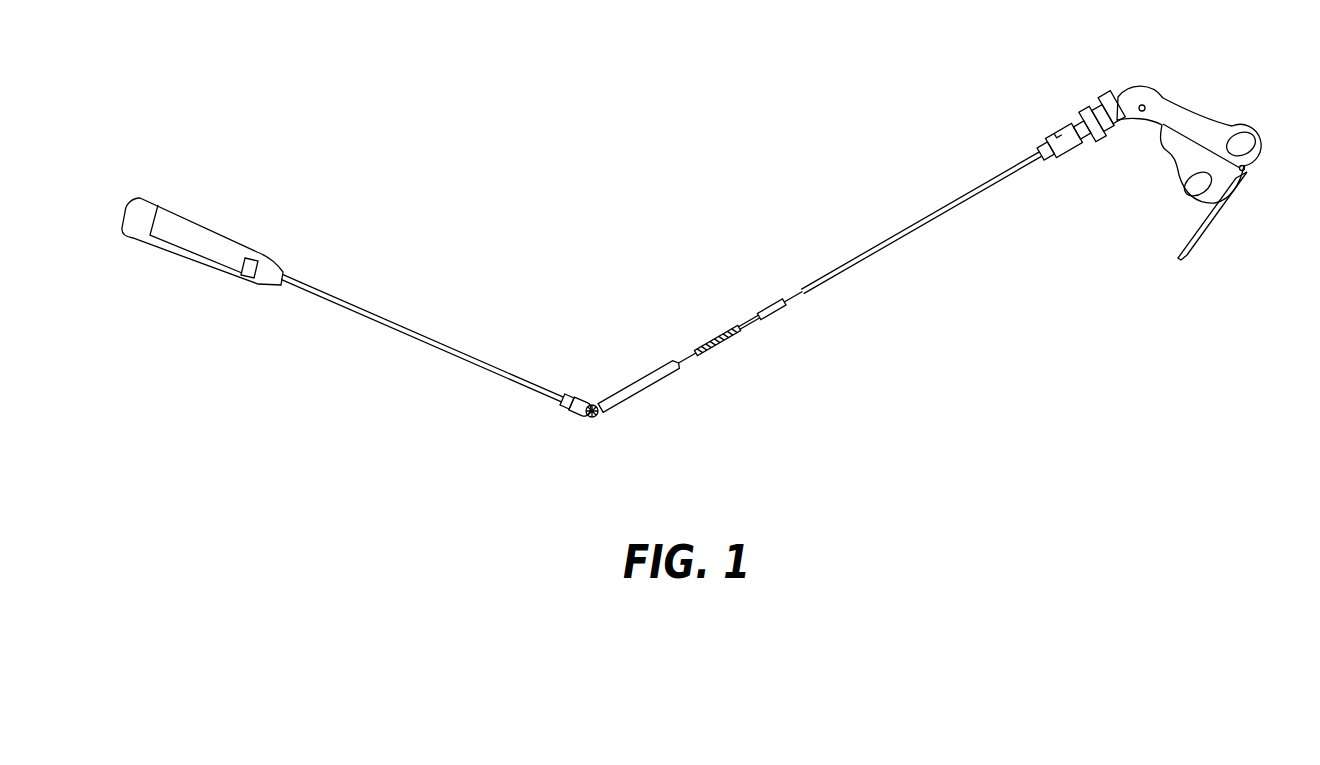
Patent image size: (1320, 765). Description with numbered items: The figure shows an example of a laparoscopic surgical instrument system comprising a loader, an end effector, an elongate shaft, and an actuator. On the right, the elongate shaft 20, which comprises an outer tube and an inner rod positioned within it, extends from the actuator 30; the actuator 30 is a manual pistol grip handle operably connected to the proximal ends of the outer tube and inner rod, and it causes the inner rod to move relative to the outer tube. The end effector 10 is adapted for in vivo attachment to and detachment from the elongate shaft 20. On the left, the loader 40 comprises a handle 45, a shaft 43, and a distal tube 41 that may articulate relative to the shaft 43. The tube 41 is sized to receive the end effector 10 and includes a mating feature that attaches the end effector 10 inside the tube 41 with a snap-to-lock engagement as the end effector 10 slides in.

The end effector 10 is at (743, 322).
The elongate shaft 20 is at (925, 210).
The actuator 30 is at (1148, 87).
The loader 40 is at (362, 310).
The distal tube 41 is at (632, 393).
The shaft 43 is at (482, 375).
The handle 45 is at (222, 194).